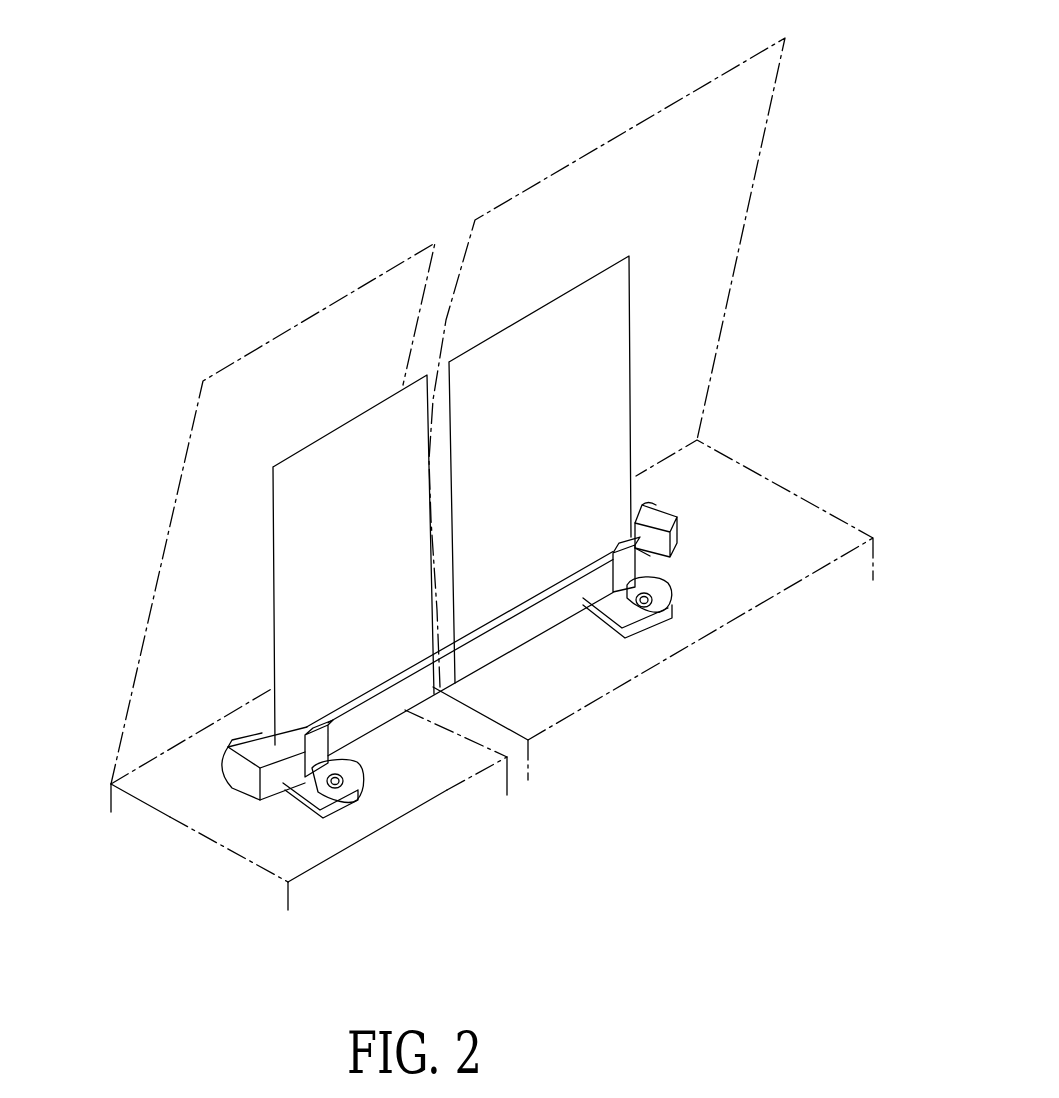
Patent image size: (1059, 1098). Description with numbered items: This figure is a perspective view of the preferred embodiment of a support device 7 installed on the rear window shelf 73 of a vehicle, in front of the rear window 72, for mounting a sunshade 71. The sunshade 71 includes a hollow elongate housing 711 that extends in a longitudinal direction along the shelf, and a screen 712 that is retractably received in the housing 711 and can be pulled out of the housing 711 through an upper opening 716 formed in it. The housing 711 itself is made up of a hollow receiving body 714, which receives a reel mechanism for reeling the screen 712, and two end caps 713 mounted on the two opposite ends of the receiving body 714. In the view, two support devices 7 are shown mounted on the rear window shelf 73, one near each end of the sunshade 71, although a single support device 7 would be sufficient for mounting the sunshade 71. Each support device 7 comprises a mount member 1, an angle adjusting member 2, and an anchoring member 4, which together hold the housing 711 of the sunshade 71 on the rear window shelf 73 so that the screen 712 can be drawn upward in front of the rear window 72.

The mount member 1 is at (312, 810).
The angle adjusting member 2 is at (350, 780).
The anchoring member 4 is at (290, 778).
The support device 7 is at (474, 755).
The sunshade 71 is at (522, 660).
The housing 711 is at (240, 771).
The screen 712 is at (613, 502).
The end caps 713 is at (230, 778).
The receiving body 714 is at (657, 553).
The upper opening 716 is at (645, 533).
The rear window 72 is at (703, 308).
The rear window shelf 73 is at (817, 550).